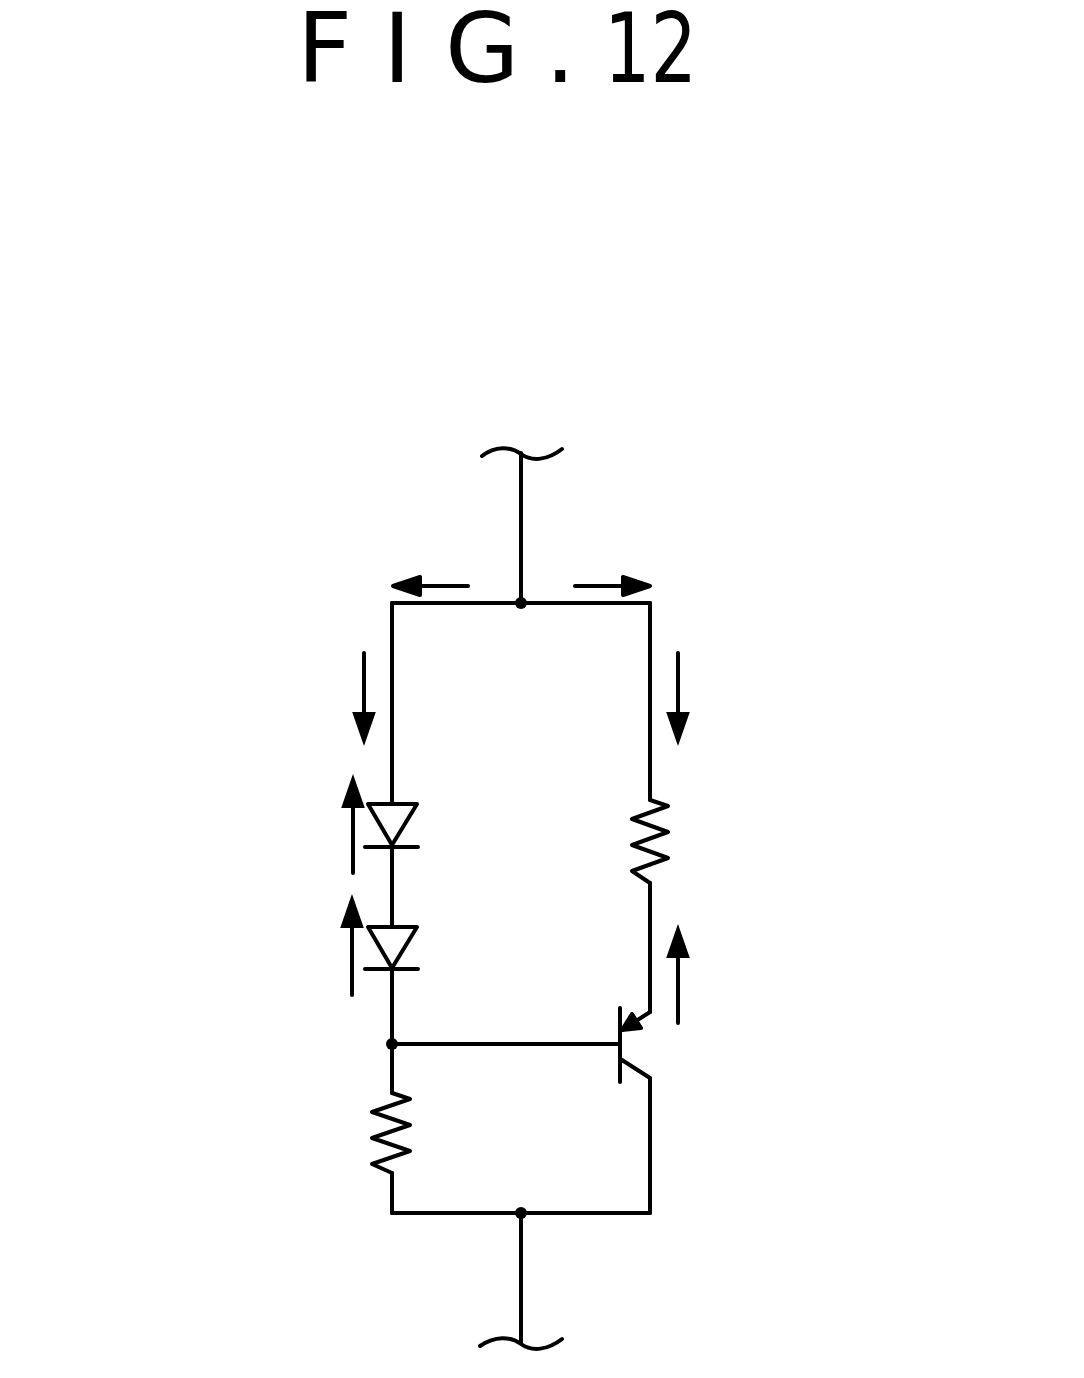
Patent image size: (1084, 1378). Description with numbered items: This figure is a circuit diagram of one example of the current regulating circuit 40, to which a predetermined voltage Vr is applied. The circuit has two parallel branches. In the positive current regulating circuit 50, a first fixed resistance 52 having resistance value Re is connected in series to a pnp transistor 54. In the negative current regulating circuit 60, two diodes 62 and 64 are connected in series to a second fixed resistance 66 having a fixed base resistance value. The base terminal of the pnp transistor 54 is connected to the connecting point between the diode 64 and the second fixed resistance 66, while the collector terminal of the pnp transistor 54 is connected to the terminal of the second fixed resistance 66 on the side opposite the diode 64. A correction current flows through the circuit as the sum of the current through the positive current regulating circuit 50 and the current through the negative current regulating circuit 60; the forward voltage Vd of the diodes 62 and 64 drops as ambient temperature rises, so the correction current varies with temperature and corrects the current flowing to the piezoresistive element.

The current regulating circuit 40 is at (673, 510).
The positive current regulating circuit 50 is at (763, 785).
The first fixed resistance 52 is at (660, 848).
The pnp transistor 54 is at (626, 1048).
The negative current regulating circuit 60 is at (247, 842).
The diode 62 is at (417, 822).
The diode 64 is at (417, 944).
The second fixed resistance 66 is at (395, 1140).